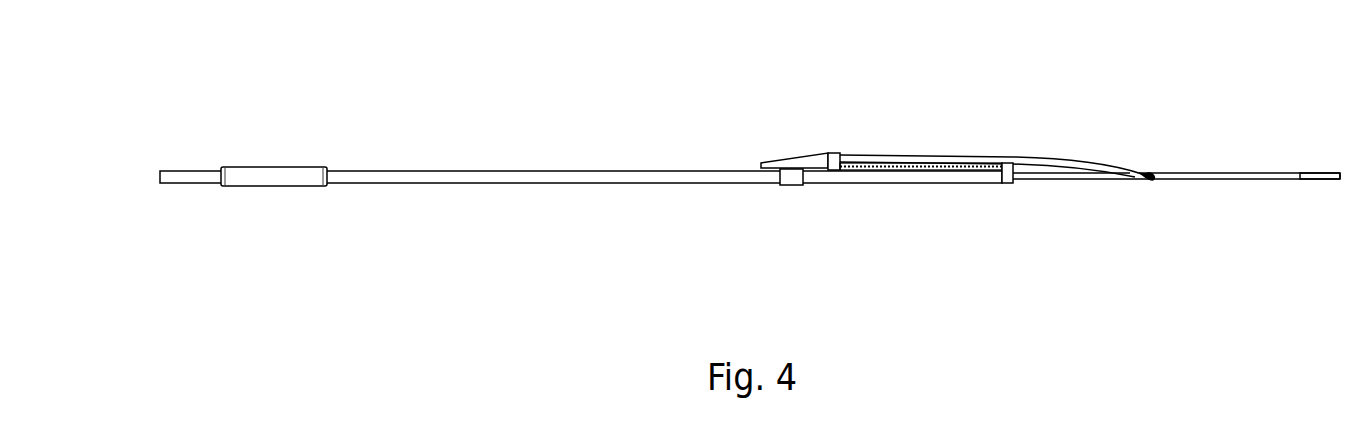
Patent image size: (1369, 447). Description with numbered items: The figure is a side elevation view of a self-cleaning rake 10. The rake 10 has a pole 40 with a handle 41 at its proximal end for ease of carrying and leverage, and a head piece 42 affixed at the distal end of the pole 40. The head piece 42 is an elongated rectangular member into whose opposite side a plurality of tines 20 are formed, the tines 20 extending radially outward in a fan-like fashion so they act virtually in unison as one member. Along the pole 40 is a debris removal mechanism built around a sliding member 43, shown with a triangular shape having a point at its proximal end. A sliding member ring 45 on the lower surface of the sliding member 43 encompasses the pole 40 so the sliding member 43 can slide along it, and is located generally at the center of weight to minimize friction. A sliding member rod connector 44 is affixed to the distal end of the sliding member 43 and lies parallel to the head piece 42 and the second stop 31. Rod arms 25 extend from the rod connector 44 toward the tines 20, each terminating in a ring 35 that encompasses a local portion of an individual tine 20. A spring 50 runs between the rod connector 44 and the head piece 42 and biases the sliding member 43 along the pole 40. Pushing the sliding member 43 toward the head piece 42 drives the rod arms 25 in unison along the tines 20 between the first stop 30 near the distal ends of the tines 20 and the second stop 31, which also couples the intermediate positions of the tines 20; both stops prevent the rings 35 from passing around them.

The self-cleaning rake 10 is at (170, 125).
The tine 20 is at (1315, 173).
The rod arm 25 is at (1081, 160).
The first stop 30 is at (1247, 173).
The second stop 31 is at (1123, 176).
The ring 35 is at (1146, 182).
The pole 40 is at (410, 177).
The handle 41 is at (265, 176).
The head piece 42 is at (1007, 163).
The sliding member 43 is at (792, 163).
The sliding member rod connector 44 is at (837, 158).
The sliding member ring 45 is at (792, 179).
The spring 50 is at (967, 172).